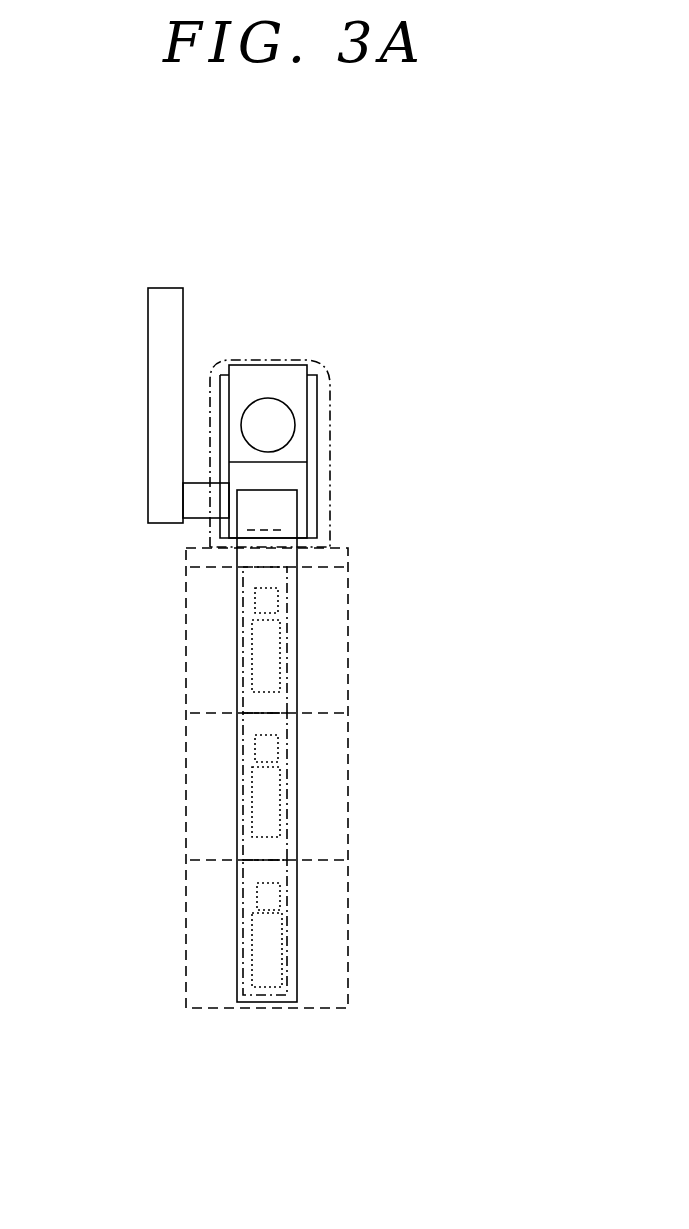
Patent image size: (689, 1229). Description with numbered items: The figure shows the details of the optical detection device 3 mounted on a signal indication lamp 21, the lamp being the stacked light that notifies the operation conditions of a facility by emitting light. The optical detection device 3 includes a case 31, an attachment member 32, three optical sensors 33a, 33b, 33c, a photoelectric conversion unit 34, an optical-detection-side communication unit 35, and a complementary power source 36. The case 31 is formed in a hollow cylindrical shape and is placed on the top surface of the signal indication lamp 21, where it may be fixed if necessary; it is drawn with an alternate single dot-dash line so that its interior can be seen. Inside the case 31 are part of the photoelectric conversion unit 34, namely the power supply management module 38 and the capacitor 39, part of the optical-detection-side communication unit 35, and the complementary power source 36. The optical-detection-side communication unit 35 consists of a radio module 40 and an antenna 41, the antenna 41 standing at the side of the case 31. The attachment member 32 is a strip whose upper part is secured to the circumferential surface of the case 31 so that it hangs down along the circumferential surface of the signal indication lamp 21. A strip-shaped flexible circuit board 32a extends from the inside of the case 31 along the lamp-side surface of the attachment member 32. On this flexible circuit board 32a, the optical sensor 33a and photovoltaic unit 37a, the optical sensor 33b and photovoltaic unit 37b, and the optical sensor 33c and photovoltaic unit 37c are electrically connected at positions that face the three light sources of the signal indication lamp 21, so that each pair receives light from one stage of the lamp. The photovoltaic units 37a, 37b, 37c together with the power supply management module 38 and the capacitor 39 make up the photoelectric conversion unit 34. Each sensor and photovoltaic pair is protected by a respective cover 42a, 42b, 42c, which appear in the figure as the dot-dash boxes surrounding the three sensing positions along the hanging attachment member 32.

The optical detection device 3 is at (322, 288).
The signal indication lamp 21 is at (202, 1008).
The case 31 is at (303, 357).
The attachment member 32 is at (258, 513).
The flexible circuit board 32a is at (322, 549).
The optical sensor 33a is at (268, 600).
The optical sensor 33b is at (268, 748).
The optical sensor 33c is at (265, 898).
The photoelectric conversion unit 34 is at (483, 442).
The optical-detection-side communication unit 35 is at (80, 397).
The complementary power source 36 is at (210, 368).
The photovoltaic unit 37a is at (272, 638).
The photovoltaic unit 37b is at (272, 785).
The photovoltaic unit 37c is at (272, 930).
The power supply management module 38 is at (305, 455).
The capacitor 39 is at (285, 430).
The radio module 40 is at (245, 472).
The antenna 41 is at (170, 422).
The cover 42a is at (262, 584).
The cover 42b is at (262, 731).
The cover 42c is at (262, 878).